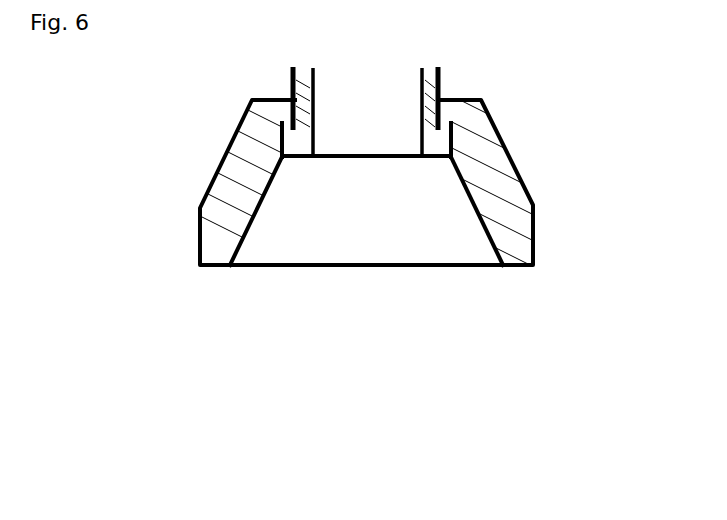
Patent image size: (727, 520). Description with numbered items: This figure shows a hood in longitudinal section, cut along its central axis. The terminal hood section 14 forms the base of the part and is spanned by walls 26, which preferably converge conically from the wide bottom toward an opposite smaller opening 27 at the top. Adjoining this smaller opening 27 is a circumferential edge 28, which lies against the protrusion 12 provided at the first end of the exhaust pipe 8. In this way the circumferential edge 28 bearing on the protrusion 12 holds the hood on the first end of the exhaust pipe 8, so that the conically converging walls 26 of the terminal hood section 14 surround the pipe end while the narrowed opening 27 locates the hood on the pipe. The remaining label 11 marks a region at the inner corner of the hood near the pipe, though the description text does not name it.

The exhaust pipe 8 is at (412, 68).
The recess bottom 11 is at (452, 162).
The protrusion 12 is at (276, 112).
The terminal hood section 14 is at (503, 267).
The walls 26 is at (210, 160).
The smaller opening 27 is at (308, 160).
The circumferential edge 28 is at (435, 157).